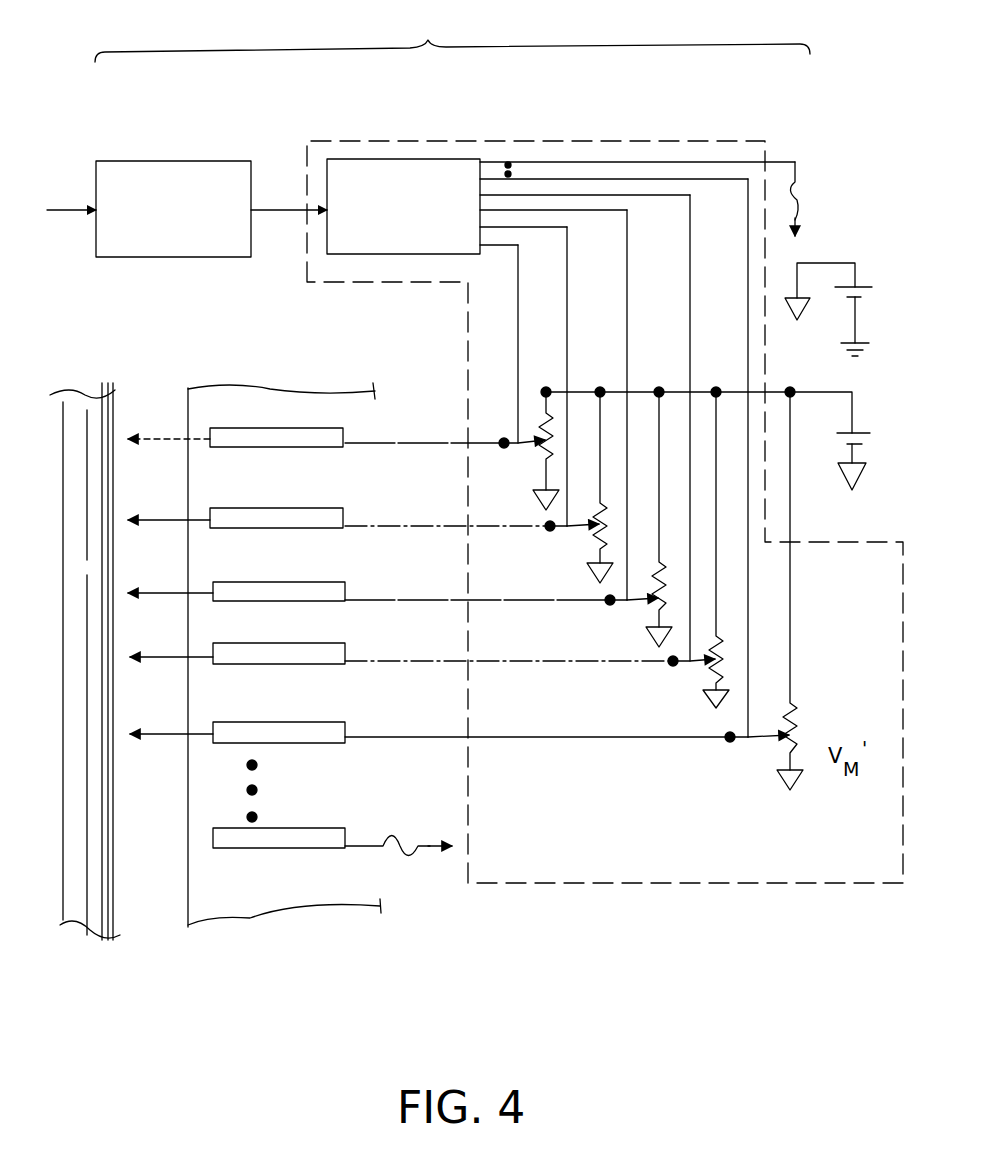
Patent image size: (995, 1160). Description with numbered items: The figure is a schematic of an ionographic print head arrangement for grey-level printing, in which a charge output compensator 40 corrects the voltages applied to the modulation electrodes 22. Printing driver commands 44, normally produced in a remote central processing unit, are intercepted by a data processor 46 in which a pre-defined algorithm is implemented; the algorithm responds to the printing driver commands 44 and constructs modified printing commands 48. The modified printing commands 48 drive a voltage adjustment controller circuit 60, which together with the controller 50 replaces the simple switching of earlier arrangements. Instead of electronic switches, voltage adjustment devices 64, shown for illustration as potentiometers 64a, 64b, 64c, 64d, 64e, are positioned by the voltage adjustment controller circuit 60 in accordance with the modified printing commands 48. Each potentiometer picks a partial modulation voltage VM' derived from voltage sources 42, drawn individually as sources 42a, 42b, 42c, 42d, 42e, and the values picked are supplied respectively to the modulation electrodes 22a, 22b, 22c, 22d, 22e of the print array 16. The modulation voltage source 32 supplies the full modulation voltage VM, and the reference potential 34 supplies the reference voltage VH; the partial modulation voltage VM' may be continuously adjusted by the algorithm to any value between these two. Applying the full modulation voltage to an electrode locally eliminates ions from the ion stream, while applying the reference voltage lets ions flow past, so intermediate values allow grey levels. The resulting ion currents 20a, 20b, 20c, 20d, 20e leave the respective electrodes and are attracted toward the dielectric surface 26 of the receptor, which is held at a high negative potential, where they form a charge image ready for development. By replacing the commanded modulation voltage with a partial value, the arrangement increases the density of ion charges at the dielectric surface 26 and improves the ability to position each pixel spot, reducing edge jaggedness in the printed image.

The charge output compensator 40 is at (452, 37).
The printing driver commands 44 is at (78, 183).
The data processor 46 is at (178, 161).
The modified printing commands 48 is at (286, 208).
The controller 50 is at (428, 139).
The voltage adjustment controller circuit 60 is at (413, 255).
The reference potential 34 is at (846, 300).
The modulation voltage source 32 is at (846, 450).
The voltage sources 42 is at (811, 763).
The voltage source 42a is at (553, 440).
The voltage source 42b is at (595, 530).
The voltage source 42c is at (657, 605).
The voltage source 42d is at (718, 660).
The voltage source 42e is at (792, 742).
The voltage adjustment devices 64 is at (542, 612).
The potentiometer 64a is at (530, 446).
The potentiometer 64b is at (558, 530).
The potentiometer 64c is at (617, 604).
The potentiometer 64d is at (680, 668).
The potentiometer 64e is at (742, 740).
The print array 16 is at (255, 410).
The modulation electrodes 22 is at (298, 870).
The ion current 20a is at (170, 442).
The ion current 20b is at (175, 520).
The ion current 20c is at (178, 598).
The ion current 20d is at (178, 658).
The ion current 20e is at (180, 736).
The modulation electrode 22a is at (224, 428).
The modulation electrode 22b is at (228, 508).
The modulation electrode 22c is at (228, 582).
The modulation electrode 22d is at (228, 643).
The modulation electrode 22e is at (228, 722).
The dielectric surface 26 is at (75, 400).